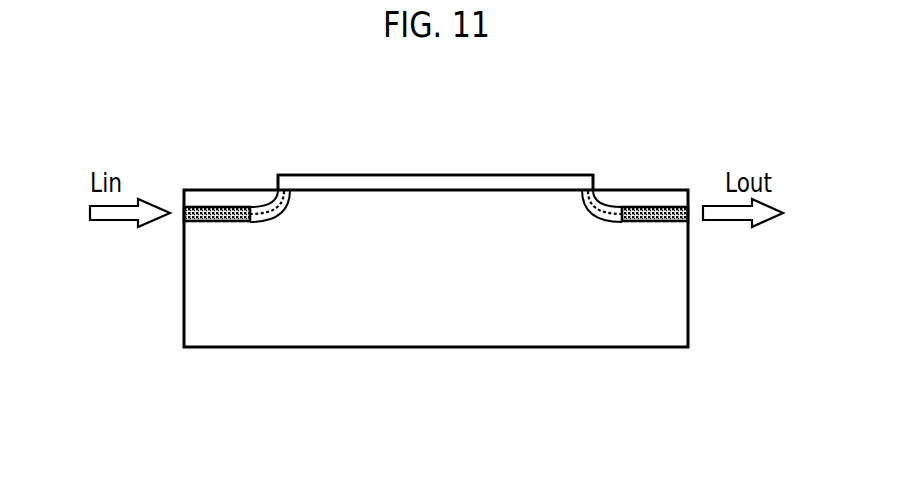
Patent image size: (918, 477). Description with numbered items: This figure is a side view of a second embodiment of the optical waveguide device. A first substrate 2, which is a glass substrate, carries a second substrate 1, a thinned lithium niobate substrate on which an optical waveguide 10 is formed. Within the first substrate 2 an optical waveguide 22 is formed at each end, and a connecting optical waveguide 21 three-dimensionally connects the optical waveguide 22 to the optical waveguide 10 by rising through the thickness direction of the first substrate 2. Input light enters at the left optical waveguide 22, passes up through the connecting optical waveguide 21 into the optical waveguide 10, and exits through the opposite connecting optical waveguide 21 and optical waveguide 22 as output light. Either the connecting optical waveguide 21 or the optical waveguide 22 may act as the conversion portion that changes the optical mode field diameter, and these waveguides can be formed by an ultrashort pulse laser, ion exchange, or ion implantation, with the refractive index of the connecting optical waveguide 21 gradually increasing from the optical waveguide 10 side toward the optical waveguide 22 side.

The second substrate 1 is at (467, 183).
The optical waveguide 10 is at (435, 182).
The first substrate 2 is at (437, 295).
The connecting optical waveguide 21 is at (600, 213).
The optical waveguide 22 is at (655, 223).